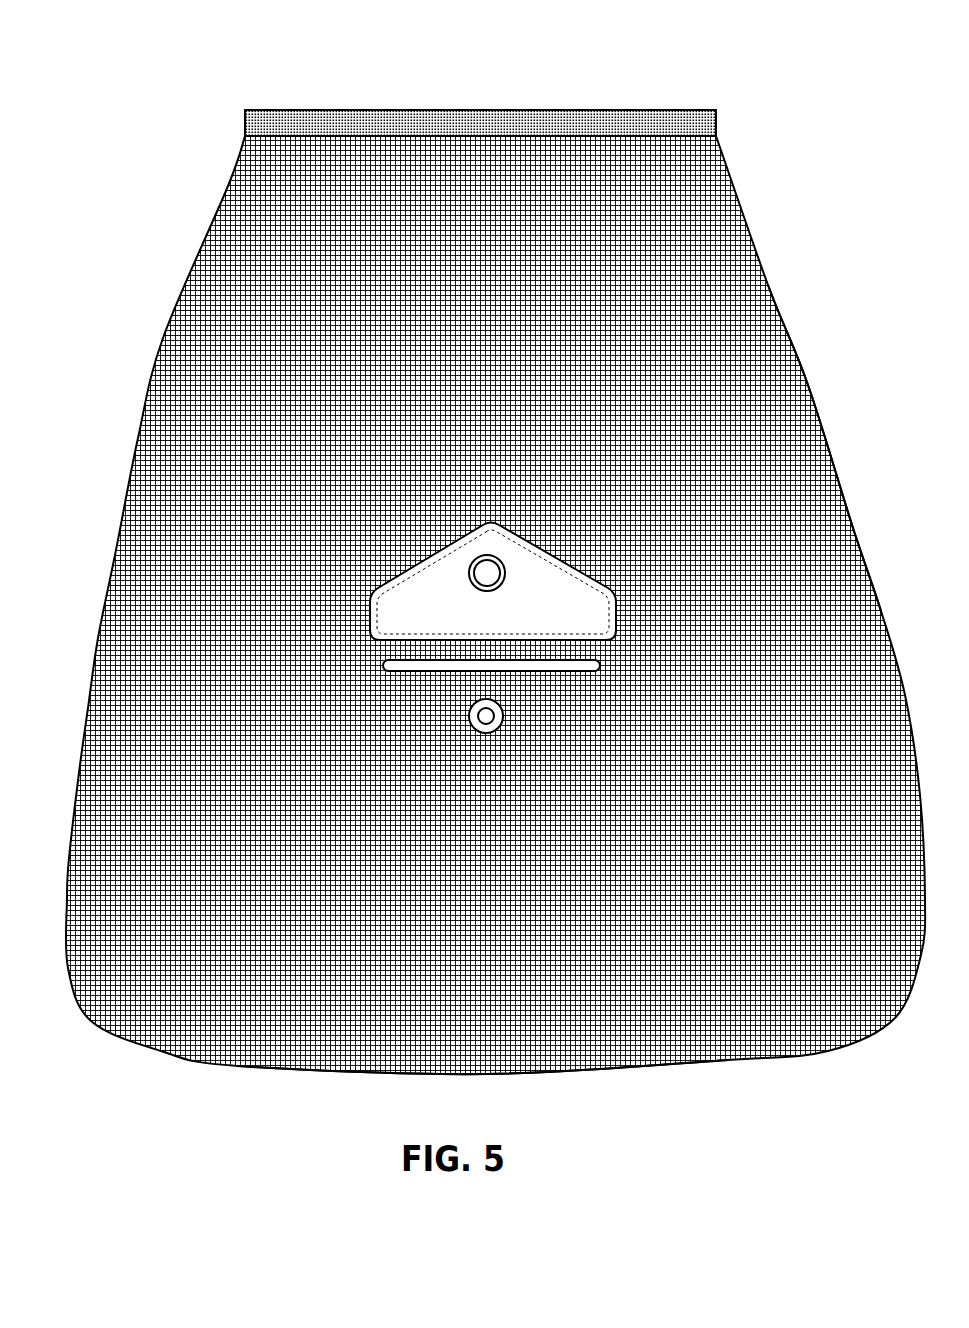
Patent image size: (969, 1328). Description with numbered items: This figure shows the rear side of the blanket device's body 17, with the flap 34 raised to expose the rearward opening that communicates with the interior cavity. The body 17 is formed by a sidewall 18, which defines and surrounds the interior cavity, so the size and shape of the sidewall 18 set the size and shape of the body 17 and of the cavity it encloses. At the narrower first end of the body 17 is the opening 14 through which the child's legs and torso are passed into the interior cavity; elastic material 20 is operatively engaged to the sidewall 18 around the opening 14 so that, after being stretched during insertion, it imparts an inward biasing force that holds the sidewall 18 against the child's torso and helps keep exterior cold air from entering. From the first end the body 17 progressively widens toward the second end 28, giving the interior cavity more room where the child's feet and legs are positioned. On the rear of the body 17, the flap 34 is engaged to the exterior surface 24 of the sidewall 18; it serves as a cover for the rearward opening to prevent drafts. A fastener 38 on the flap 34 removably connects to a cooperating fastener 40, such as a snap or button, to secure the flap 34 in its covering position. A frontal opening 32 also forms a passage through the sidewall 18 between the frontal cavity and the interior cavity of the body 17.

The opening 14 is at (498, 101).
The body 17 is at (800, 377).
The sidewall 18 is at (825, 528).
The elastic material 20 is at (342, 112).
The exterior surface 24 is at (417, 891).
The second end 28 is at (342, 1062).
The frontal opening 32 is at (404, 656).
The flap 34 is at (447, 553).
The fastener 38 is at (483, 572).
The cooperating fastener 40 is at (478, 708).